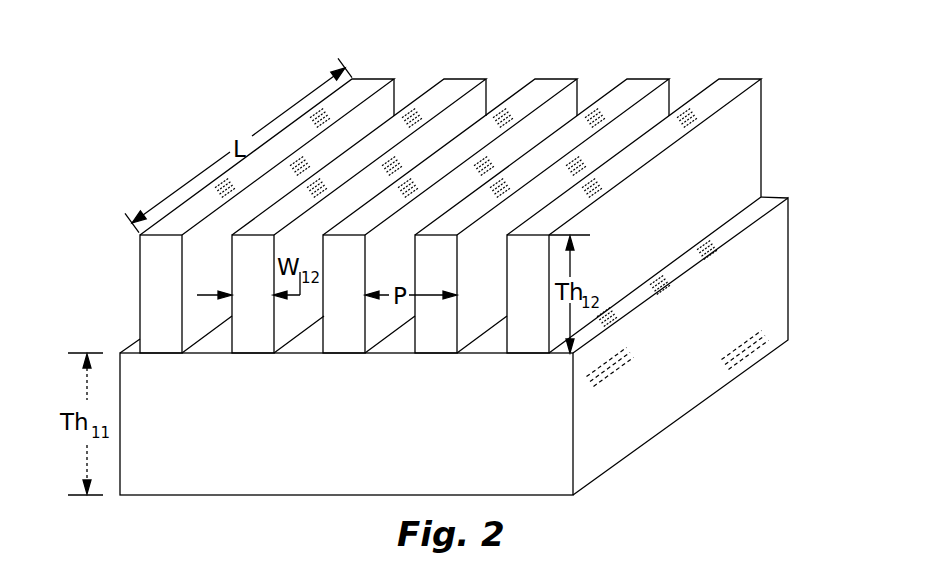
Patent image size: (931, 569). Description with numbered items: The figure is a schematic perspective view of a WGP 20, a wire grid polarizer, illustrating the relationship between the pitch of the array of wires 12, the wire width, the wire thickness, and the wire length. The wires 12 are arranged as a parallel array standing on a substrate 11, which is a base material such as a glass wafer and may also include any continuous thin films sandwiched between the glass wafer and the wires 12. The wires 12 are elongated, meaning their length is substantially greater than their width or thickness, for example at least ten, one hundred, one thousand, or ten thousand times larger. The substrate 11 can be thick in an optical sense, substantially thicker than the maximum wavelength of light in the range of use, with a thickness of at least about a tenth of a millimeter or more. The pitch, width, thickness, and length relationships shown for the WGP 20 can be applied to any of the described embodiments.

The WGP 20 is at (150, 118).
The wires 12 is at (88, 270).
The substrate 11 is at (361, 438).